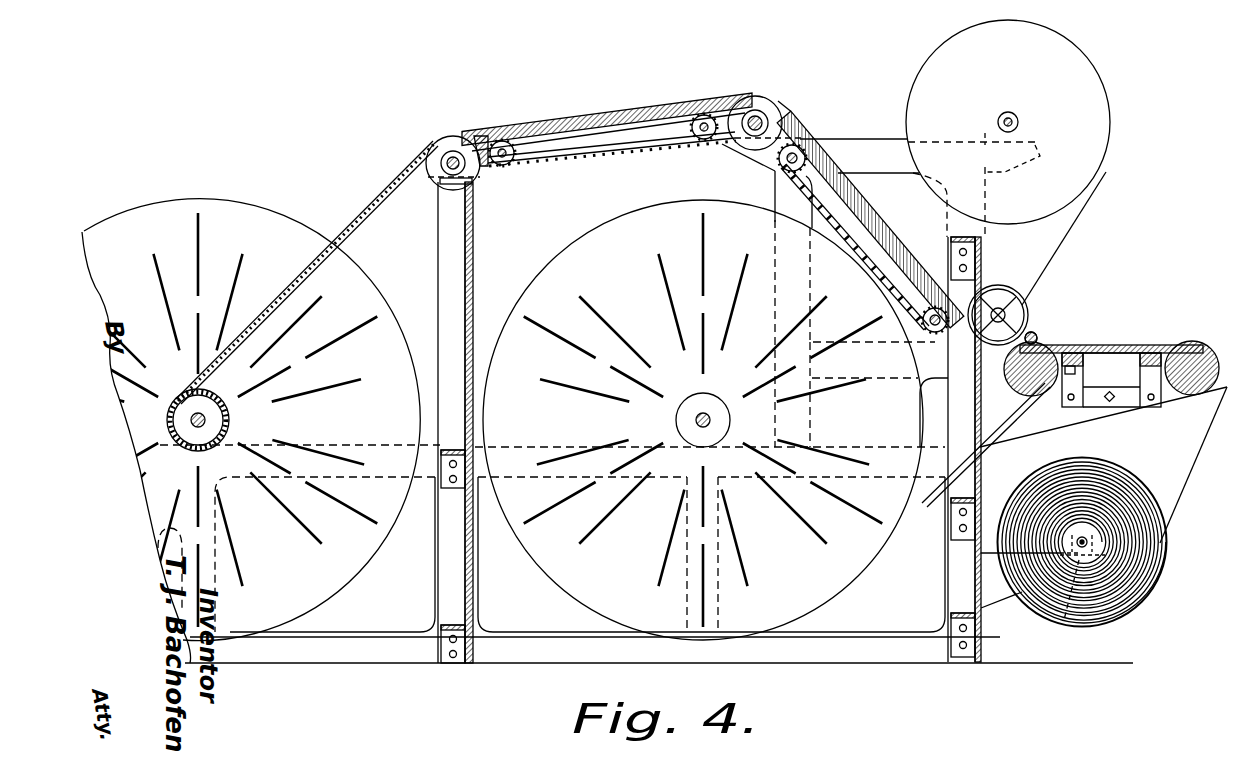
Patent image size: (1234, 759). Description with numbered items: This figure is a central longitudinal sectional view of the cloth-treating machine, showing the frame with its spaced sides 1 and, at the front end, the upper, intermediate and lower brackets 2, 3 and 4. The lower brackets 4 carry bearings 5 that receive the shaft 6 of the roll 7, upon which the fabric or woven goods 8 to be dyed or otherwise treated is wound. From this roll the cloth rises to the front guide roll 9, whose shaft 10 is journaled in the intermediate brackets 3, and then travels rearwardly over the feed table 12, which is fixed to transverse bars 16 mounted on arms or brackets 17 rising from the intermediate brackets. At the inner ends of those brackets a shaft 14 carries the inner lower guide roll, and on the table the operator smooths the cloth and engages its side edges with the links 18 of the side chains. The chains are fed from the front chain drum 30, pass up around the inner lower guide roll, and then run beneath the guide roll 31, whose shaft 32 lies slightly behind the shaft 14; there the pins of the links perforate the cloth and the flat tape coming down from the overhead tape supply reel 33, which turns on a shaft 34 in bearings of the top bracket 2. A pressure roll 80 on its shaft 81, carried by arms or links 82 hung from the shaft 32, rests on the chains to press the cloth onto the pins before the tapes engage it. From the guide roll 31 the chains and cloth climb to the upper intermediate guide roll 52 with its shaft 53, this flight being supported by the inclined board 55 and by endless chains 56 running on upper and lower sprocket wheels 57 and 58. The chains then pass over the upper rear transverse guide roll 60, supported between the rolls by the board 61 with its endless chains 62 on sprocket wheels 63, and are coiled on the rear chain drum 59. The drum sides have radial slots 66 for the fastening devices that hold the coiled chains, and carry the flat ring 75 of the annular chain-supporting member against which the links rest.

The spaced sides 1 is at (505, 660).
The upper bracket 2 is at (1012, 164).
The intermediate bracket 3 is at (1128, 426).
The lower bracket 4 is at (990, 602).
The bearings 5 is at (1067, 602).
The shaft 6 is at (1088, 544).
The roll 7 is at (1090, 525).
The fabric or woven goods 8 is at (1138, 592).
The front guide roll 9 is at (1212, 360).
The shaft 10 is at (1185, 396).
The feed table 12 is at (1148, 352).
The shaft 14 is at (1020, 390).
The transverse bars 16 is at (1172, 352).
The arms or brackets 17 is at (1090, 378).
The links 18 is at (1004, 440).
The chain drum 30 is at (570, 580).
The guide roll 31 is at (1003, 290).
The shaft 32 is at (1006, 313).
The tape supply reel 33 is at (1110, 148).
The shaft 34 is at (1020, 120).
The upper intermediate guide roll 52 is at (765, 102).
The shaft 53 is at (768, 124).
The inclined board or member 55 is at (920, 243).
The endless chains 56 is at (845, 222).
The upper sprocket wheel 57 is at (780, 170).
The lower sprocket wheel 58 is at (925, 332).
The rear chain drum 59 is at (345, 568).
The upper rear transverse guide roll 60 is at (446, 124).
The supporting board or member 61 is at (578, 110).
The endless chains 62 is at (563, 162).
The sprocket wheels 63 is at (500, 168).
The radial slots 66 is at (315, 325).
The flat ring 75 is at (224, 424).
The pressure roll 80 is at (1122, 345).
The shaft 81 is at (1050, 355).
The bearings or arms or links 82 is at (1037, 335).